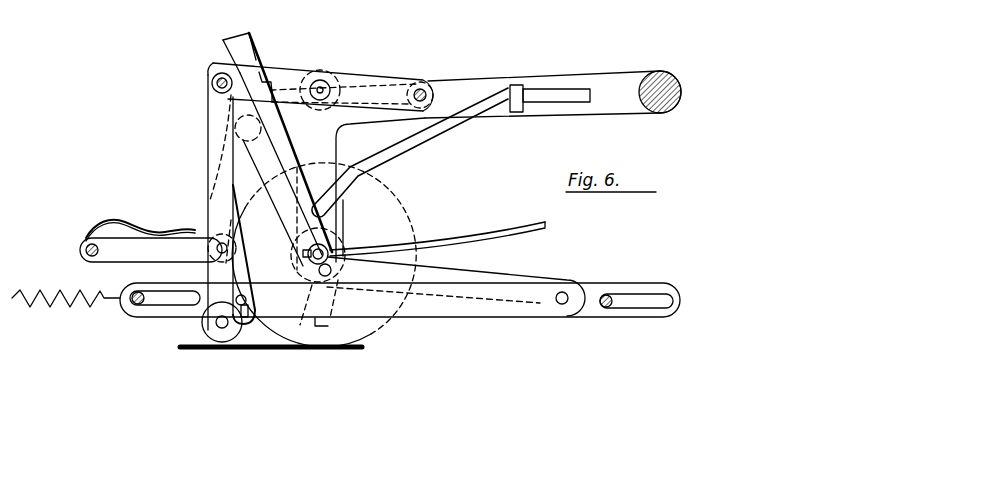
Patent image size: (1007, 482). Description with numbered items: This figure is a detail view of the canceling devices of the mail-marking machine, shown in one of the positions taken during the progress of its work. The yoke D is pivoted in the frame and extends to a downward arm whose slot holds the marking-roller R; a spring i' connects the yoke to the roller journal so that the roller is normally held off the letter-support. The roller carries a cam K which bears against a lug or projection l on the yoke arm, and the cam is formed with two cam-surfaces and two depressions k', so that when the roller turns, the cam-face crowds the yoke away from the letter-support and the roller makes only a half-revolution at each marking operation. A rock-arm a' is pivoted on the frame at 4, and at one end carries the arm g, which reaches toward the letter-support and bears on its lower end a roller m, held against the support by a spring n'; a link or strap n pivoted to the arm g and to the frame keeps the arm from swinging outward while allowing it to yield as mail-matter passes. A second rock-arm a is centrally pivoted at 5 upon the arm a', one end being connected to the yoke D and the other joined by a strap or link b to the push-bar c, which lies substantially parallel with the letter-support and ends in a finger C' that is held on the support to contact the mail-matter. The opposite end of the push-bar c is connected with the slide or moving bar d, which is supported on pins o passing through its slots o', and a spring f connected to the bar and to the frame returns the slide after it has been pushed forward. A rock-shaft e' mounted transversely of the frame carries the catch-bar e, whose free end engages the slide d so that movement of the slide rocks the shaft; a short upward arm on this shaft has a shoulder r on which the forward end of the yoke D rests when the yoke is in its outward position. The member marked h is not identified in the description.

The second rock-arm a is at (320, 73).
The shoulder r is at (271, 80).
The pivot 5 is at (327, 84).
The rock-arm a' is at (344, 97).
The pivot 4 is at (428, 88).
The yoke D is at (508, 166).
The spring i' is at (410, 152).
The lug or projection l is at (336, 224).
The marking-roller R is at (418, 218).
The arm g is at (210, 153).
The catch-bar e is at (282, 178).
The rock-shaft e' is at (248, 128).
The strap or link b is at (273, 203).
The cam K is at (300, 253).
The link or strap n is at (151, 250).
The spring n' is at (140, 220).
The spring f is at (66, 288).
The slide or moving bar d is at (462, 305).
The slots o' is at (401, 318).
The pins o is at (358, 319).
The push-bar c is at (456, 283).
The curved arm h is at (437, 236).
The roller m is at (210, 325).
The depressions k' is at (301, 314).
The finger C' is at (329, 311).